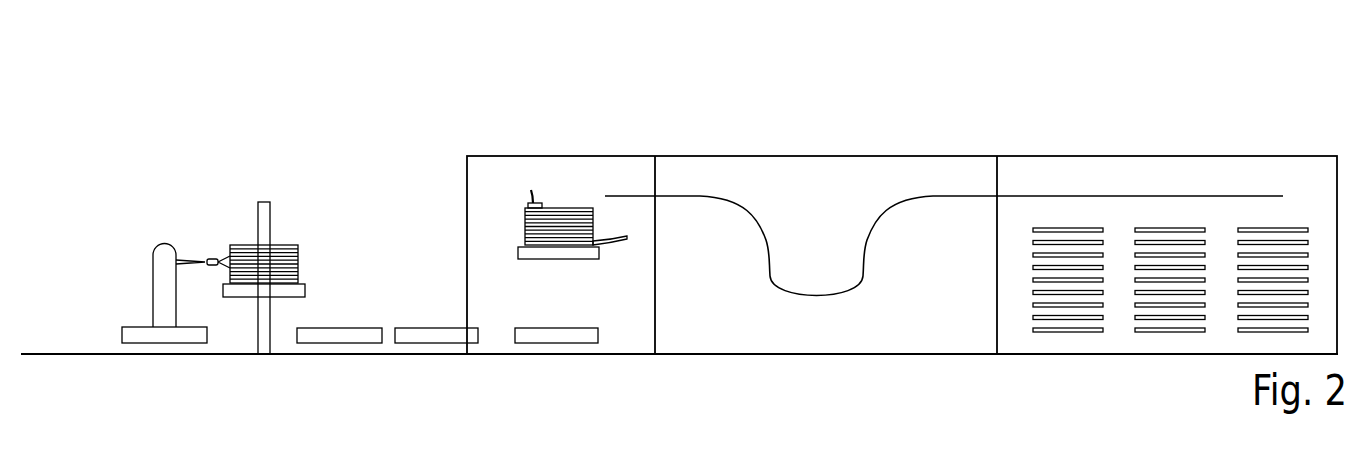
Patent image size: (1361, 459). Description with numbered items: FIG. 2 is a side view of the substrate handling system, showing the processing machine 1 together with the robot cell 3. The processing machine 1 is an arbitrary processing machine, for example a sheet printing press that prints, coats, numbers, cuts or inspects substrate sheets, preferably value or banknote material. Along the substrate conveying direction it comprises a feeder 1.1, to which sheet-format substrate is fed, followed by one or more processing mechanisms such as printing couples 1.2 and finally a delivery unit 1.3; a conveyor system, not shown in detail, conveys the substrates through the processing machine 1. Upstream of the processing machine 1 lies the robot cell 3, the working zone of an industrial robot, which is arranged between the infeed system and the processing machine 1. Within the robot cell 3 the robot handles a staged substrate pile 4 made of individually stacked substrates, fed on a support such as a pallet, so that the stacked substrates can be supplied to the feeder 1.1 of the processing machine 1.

The processing machine 1 is at (905, 117).
The feeder 1.1 is at (572, 190).
The printing couples 1.2 is at (826, 238).
The delivery unit 1.3 is at (1170, 228).
The robot cell 3 is at (150, 222).
The substrate pile 4 is at (277, 255).